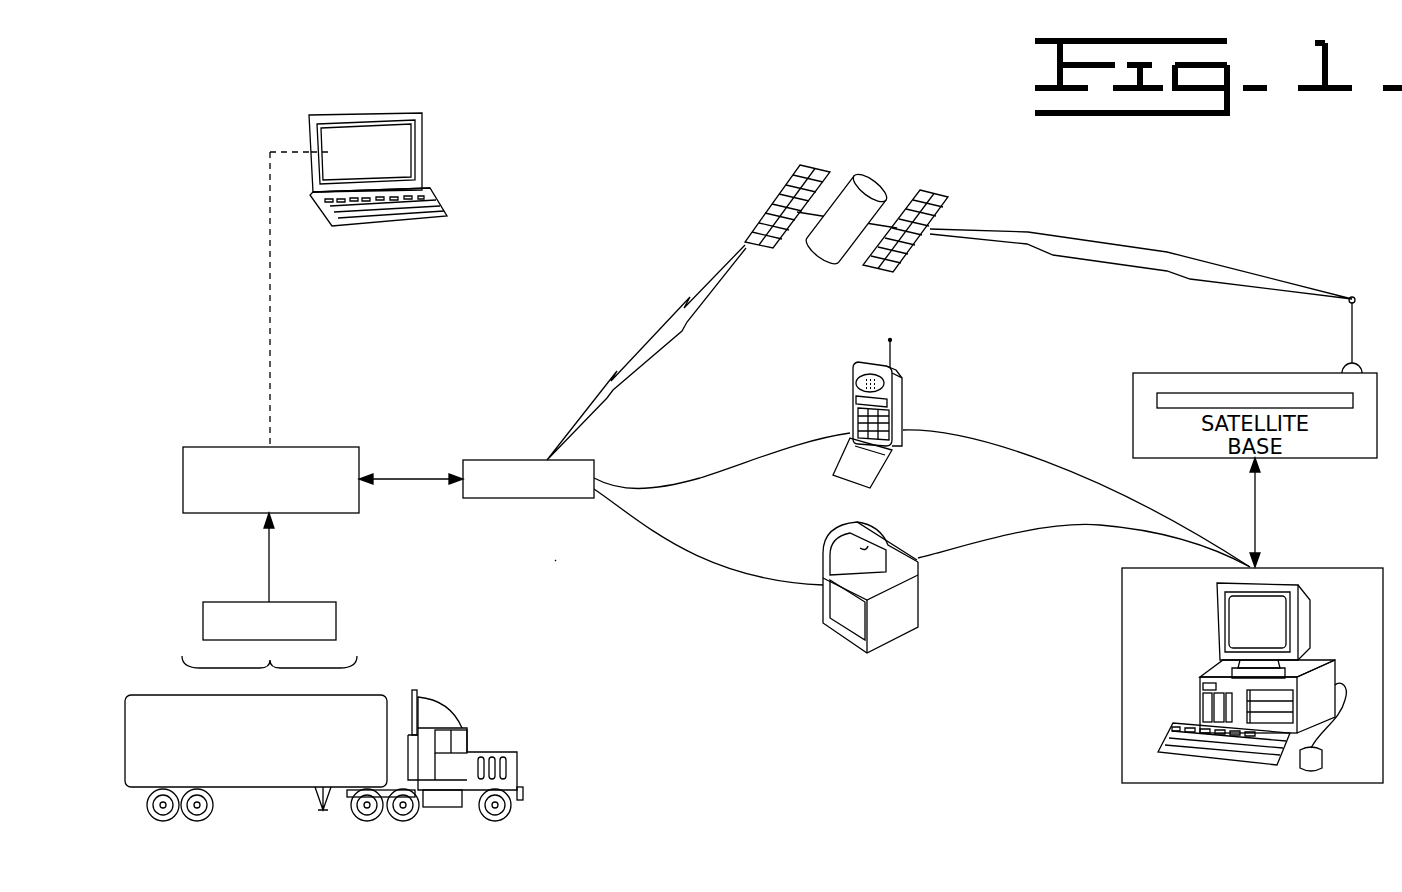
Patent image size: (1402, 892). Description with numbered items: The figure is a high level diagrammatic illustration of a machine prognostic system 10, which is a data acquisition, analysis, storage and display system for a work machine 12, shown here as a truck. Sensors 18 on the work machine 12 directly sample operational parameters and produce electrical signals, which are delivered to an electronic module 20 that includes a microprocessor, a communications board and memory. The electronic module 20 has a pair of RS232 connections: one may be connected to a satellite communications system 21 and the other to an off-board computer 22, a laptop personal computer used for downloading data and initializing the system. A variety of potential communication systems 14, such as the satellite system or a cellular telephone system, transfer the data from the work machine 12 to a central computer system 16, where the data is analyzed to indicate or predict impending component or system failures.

The machine prognostic system 10 is at (566, 569).
The work machine 12 is at (605, 771).
The communication systems 14 is at (482, 402).
The central computer system 16 is at (1122, 663).
The sensors 18 is at (390, 610).
The electronic module 20 is at (317, 447).
The satellite communications system 21 is at (983, 194).
The off-board computer 22 is at (422, 148).